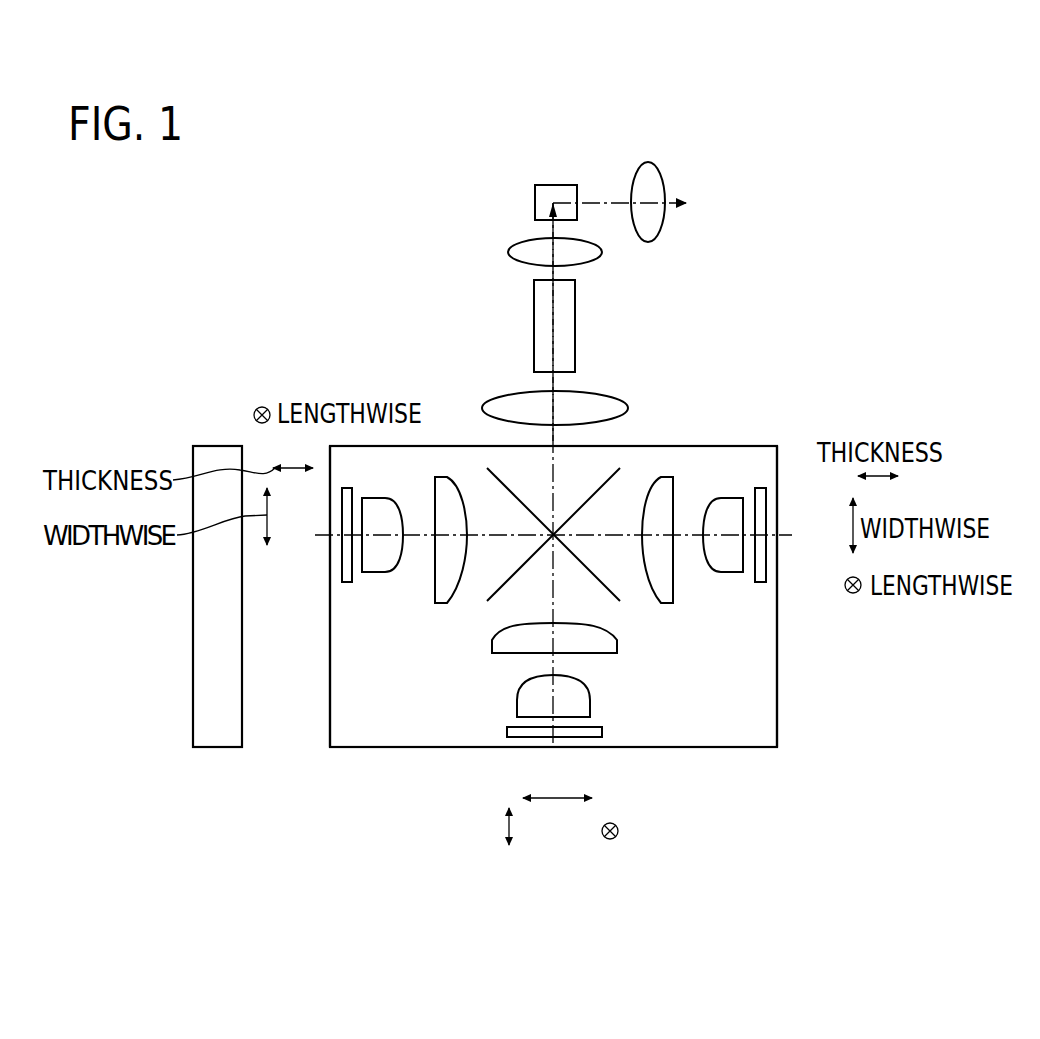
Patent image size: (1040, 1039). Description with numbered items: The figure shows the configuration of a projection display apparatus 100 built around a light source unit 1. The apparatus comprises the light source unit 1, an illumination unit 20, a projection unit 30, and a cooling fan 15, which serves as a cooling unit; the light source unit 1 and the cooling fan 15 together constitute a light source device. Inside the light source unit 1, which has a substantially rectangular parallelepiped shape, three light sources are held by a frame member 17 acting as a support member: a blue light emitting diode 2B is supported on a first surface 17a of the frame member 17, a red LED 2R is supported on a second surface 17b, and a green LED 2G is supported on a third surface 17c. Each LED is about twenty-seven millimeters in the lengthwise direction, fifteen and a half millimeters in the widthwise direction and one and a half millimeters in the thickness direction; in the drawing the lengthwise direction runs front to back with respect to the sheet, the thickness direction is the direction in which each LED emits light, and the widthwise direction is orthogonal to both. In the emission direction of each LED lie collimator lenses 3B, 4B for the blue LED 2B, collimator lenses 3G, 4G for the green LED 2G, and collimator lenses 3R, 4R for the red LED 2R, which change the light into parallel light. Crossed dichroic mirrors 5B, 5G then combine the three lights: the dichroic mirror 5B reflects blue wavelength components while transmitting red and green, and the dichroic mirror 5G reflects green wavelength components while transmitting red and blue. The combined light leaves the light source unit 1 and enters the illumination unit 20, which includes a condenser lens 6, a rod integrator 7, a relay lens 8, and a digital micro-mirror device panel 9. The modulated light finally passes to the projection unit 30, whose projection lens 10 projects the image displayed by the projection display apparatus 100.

The light source unit 1 is at (455, 445).
The blue light emitting diode 2B is at (345, 570).
The green LED 2G is at (765, 552).
The red LED 2R is at (602, 728).
The collimator lens 3B is at (378, 505).
The collimator lens 3G is at (727, 505).
The collimator lens 3R is at (517, 700).
The collimator lens 4B is at (435, 587).
The collimator lens 4G is at (667, 588).
The collimator lens 4R is at (613, 643).
The dichroic mirror 5B is at (505, 583).
The dichroic mirror 5G is at (602, 583).
The condenser lens 6 is at (595, 405).
The rod integrator 7 is at (540, 327).
The relay lens 8 is at (512, 252).
The digital micro-mirror device panel 9 is at (540, 203).
The projection lens 10 is at (650, 240).
The cooling fan 15 is at (218, 450).
The frame member 17 is at (390, 740).
The surface 17a is at (330, 732).
The surface 17b is at (455, 750).
The surface 17c is at (777, 665).
The illumination unit 20 is at (431, 243).
The projection unit 30 is at (678, 103).
The projection display apparatus 100 is at (802, 767).